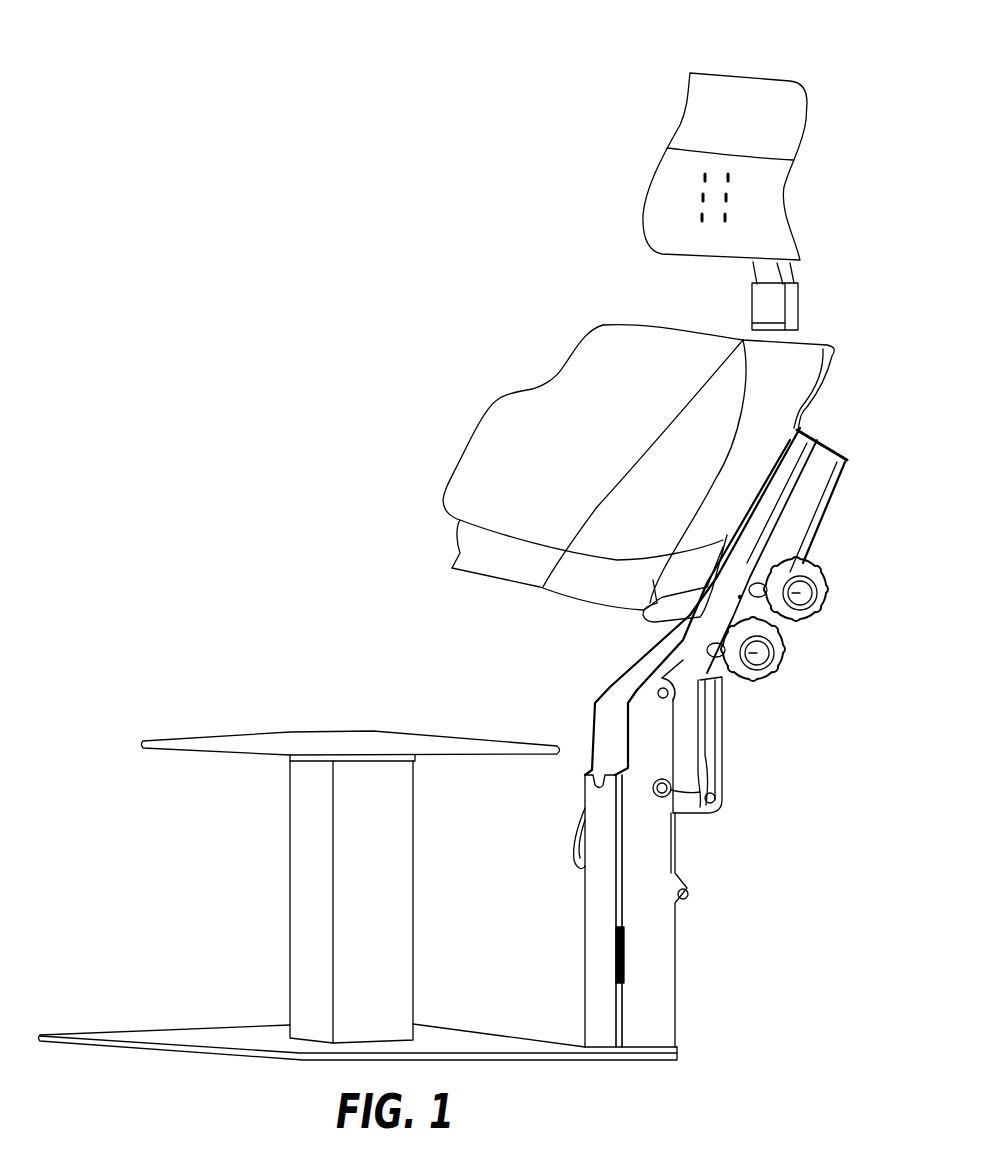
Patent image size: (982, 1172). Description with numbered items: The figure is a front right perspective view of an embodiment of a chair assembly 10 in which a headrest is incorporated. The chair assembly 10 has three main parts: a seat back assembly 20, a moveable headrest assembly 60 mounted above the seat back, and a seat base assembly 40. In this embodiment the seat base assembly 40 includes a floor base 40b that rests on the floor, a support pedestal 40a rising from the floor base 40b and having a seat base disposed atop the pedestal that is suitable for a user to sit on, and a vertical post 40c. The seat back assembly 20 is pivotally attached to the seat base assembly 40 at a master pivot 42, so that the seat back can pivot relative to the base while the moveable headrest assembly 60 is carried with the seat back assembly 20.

The chair assembly 10 is at (331, 732).
The seat back assembly 20 is at (540, 398).
The moveable headrest assembly 60 is at (737, 95).
The seat base assembly 40 is at (147, 741).
The support pedestal 40a is at (318, 893).
The floor base 40b is at (240, 1054).
The vertical post 40c is at (660, 987).
The master pivot 42 is at (673, 697).